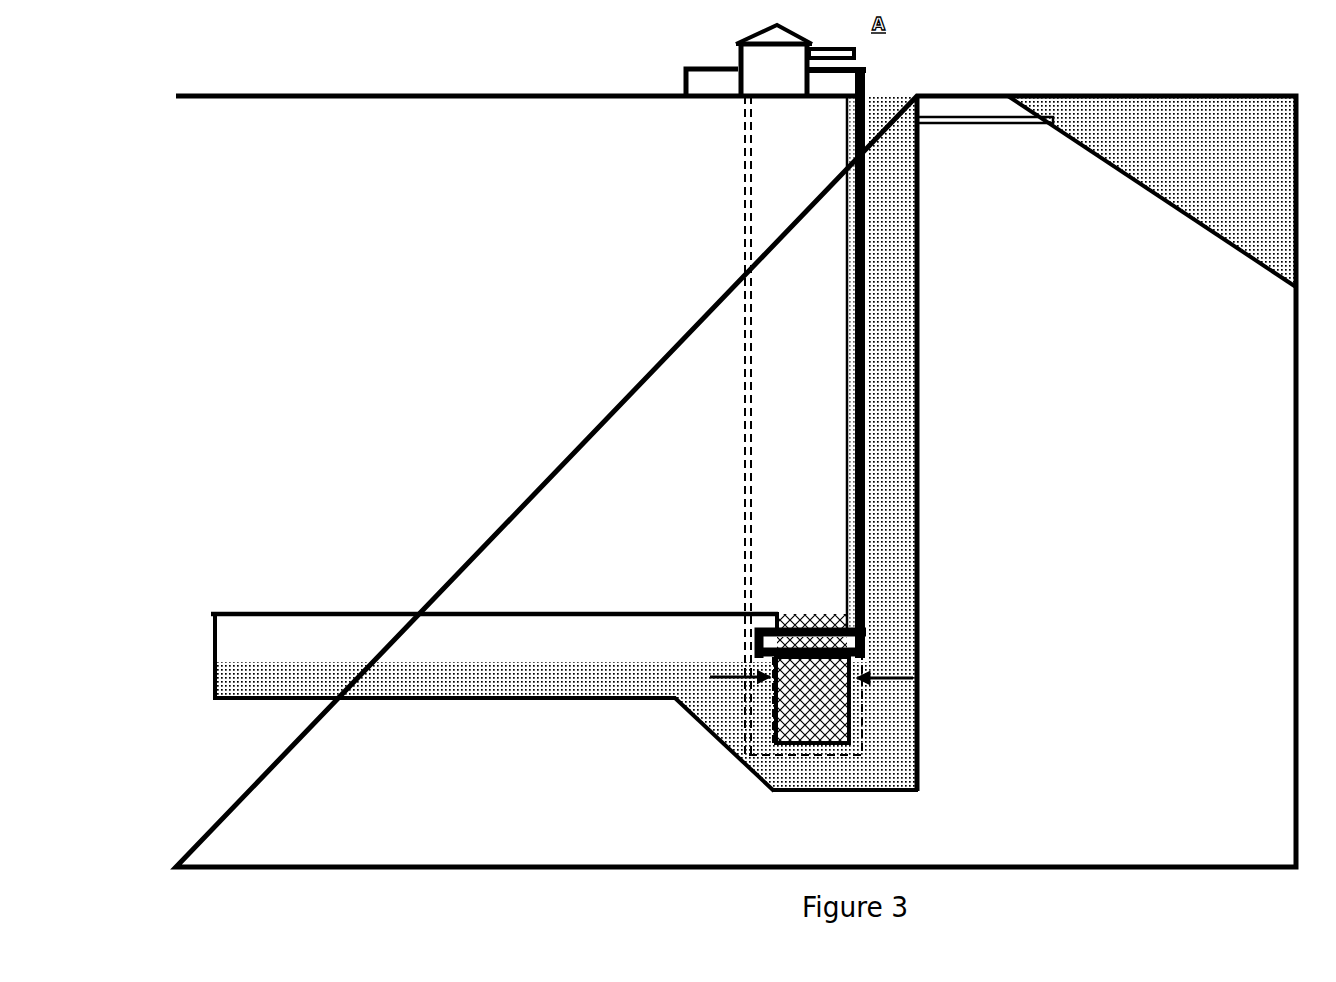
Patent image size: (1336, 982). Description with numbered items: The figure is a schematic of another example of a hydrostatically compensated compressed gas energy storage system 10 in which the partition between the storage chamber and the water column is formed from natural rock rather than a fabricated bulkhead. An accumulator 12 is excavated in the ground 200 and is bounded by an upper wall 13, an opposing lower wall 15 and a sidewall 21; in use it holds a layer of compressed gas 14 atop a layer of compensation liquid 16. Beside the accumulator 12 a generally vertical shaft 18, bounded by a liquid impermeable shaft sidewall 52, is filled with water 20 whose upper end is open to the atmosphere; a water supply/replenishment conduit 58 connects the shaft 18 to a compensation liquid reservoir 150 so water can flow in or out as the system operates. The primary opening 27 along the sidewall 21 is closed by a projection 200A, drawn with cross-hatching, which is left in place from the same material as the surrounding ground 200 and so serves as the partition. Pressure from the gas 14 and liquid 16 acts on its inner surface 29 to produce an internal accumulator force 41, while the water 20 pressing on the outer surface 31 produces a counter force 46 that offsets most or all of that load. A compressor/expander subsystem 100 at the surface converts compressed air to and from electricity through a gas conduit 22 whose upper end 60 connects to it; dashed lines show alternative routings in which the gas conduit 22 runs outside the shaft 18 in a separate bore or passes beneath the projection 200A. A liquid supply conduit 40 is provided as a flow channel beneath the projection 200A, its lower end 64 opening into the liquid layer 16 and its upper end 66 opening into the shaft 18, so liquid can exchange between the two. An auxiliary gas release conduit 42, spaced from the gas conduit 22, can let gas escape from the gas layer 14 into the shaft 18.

The compressed gas energy storage system 10 is at (1066, 58).
The accumulator 12 is at (214, 622).
The upper wall 13 is at (543, 613).
The compressed gas layer 14 is at (385, 628).
The lower wall 15 is at (540, 700).
The compensation liquid layer 16 is at (270, 683).
The shaft 18 is at (846, 372).
The water 20 is at (857, 410).
The sidewall 21 is at (218, 647).
The gas conduit 22 is at (745, 405).
The primary opening 27 is at (772, 597).
The inner surface 29 is at (771, 627).
The outer surface 31 is at (863, 660).
The liquid supply conduit 40 is at (798, 779).
The internal accumulator force 41 is at (730, 664).
The auxiliary gas release conduit 42 is at (862, 617).
The counter force 46 is at (920, 676).
The shaft sidewall 52 is at (920, 165).
The water supply/replenishment conduit 58 is at (1005, 124).
The upper end of gas conduit 60 is at (862, 70).
The lower end of liquid supply conduit 64 is at (669, 666).
The upper end of liquid supply conduit 66 is at (920, 700).
The compressor/expander subsystem 100 is at (847, 22).
The compensation liquid reservoir 150 is at (1198, 130).
The ground 200 is at (1119, 463).
The projection 200A is at (812, 612).